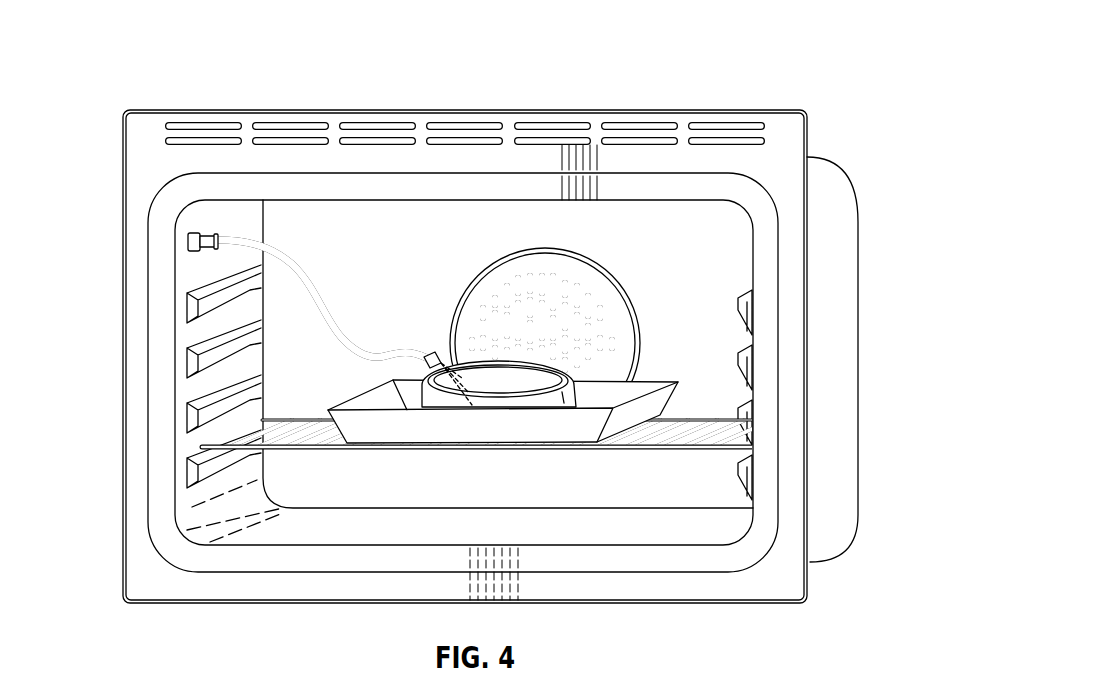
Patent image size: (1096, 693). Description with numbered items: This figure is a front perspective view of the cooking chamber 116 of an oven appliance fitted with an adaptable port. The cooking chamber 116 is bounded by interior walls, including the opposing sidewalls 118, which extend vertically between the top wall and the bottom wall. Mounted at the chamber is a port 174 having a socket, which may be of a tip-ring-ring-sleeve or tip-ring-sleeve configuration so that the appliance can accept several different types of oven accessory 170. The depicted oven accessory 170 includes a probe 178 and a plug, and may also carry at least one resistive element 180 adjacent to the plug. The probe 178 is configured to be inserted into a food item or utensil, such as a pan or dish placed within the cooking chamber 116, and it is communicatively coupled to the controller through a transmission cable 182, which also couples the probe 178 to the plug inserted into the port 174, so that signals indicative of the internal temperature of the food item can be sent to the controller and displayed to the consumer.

The cooking chamber 116 is at (681, 75).
The sidewalls 118 is at (252, 358).
The oven accessory 170 is at (301, 262).
The port 174 is at (190, 226).
The probe 178 is at (451, 360).
The resistive element 180 is at (207, 229).
The transmission cable 182 is at (339, 337).